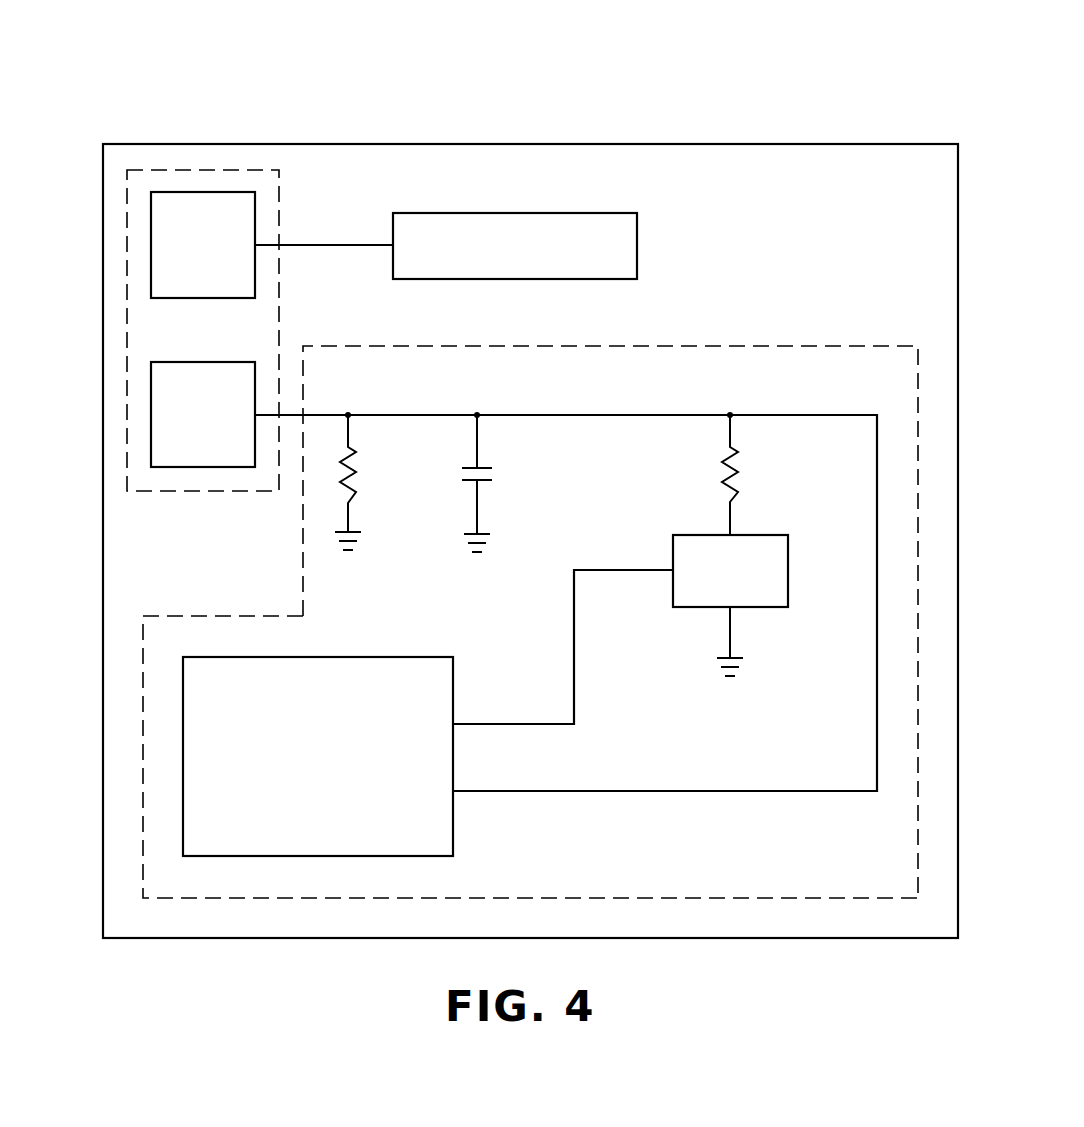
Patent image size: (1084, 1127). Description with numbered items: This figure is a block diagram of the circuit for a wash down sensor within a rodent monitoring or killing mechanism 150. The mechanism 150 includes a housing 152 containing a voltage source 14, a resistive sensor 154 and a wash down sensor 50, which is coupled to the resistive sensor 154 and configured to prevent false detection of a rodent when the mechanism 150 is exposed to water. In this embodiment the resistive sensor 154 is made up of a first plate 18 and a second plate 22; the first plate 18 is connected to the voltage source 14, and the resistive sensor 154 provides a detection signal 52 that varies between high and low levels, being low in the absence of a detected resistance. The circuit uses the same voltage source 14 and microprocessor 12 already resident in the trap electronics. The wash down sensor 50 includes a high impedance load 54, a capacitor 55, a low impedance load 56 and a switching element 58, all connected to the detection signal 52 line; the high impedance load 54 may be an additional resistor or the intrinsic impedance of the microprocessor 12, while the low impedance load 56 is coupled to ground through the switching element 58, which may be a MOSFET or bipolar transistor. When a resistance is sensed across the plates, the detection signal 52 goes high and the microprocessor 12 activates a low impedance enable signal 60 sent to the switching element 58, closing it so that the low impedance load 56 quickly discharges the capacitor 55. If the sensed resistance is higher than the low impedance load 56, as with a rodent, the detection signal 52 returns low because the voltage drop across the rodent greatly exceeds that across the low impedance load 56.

The rodent monitoring or killing mechanism 150 is at (744, 92).
The housing 152 is at (889, 143).
The resistive sensor 154 is at (127, 230).
The first plate 18 is at (255, 210).
The voltage source 14 is at (637, 228).
The second plate 22 is at (240, 470).
The detection signal 52 is at (640, 414).
The wash down sensor 50 is at (172, 615).
The high impedance load 54 is at (354, 476).
The capacitor 55 is at (490, 479).
The low impedance load 56 is at (737, 478).
The switching element 58 is at (788, 568).
The low impedance enable signal 60 is at (514, 722).
The microprocessor 12 is at (397, 656).